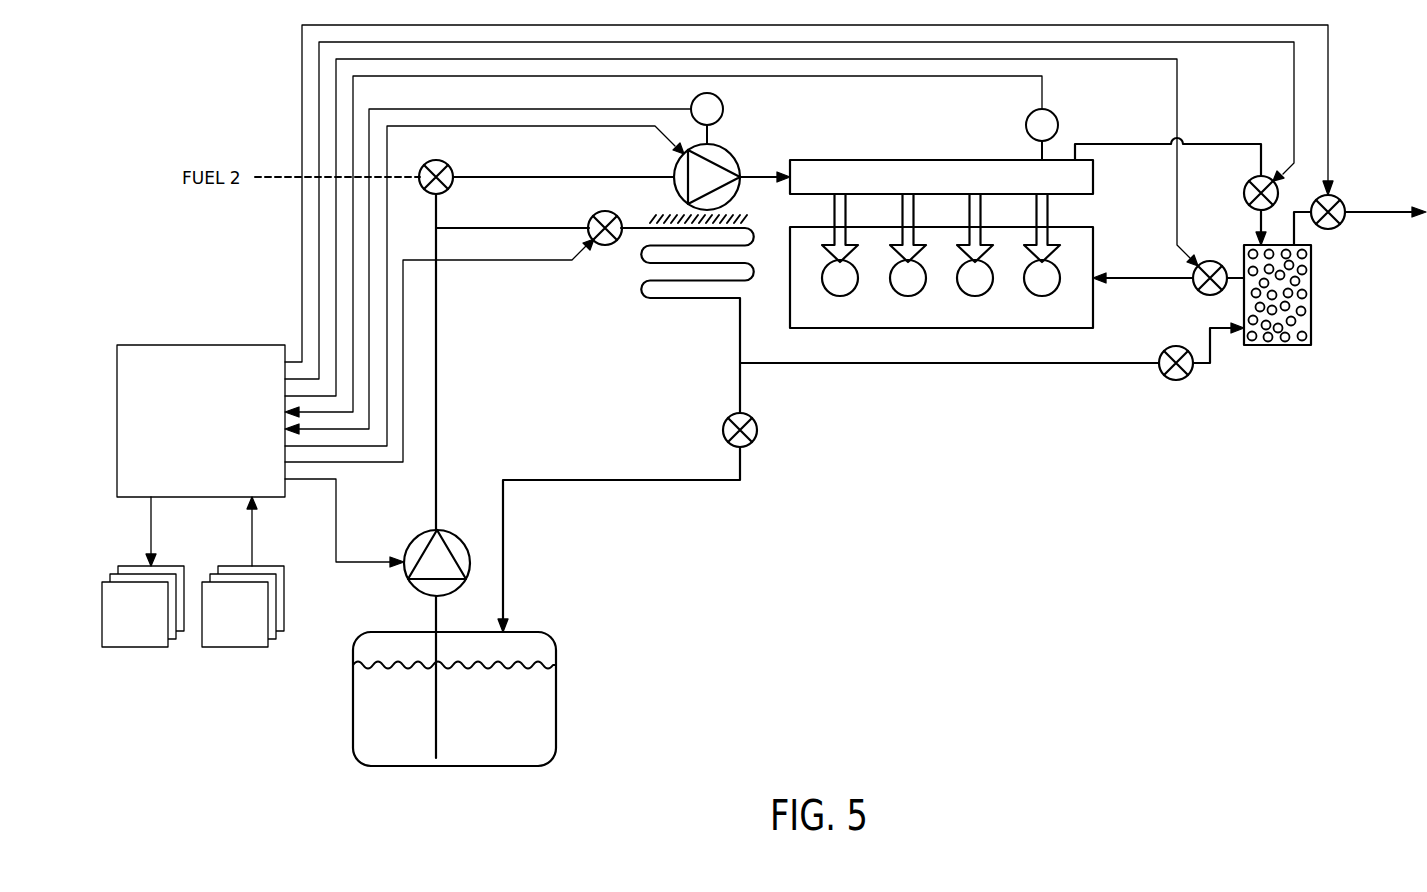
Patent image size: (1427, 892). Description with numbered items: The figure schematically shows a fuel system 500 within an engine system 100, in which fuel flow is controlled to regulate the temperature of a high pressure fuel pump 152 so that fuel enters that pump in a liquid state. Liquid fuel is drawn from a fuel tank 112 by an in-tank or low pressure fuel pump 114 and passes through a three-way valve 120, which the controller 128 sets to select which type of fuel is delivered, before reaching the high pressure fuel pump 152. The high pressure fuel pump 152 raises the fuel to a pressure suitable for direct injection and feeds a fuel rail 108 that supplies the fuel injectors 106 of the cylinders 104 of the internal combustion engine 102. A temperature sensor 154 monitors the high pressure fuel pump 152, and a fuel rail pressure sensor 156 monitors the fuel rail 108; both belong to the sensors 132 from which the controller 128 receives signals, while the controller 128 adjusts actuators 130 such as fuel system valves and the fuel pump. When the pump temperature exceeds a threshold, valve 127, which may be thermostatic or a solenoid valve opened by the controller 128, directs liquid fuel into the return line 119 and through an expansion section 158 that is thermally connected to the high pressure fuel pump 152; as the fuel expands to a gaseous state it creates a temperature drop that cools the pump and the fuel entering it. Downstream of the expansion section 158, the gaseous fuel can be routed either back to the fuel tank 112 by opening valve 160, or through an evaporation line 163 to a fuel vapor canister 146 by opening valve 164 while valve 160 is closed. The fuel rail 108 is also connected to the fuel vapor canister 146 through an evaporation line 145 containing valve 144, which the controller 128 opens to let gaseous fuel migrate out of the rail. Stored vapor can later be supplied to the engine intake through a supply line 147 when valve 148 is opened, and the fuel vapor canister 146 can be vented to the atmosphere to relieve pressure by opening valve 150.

The engine system 100 is at (283, 76).
The internal combustion engine 102 is at (1060, 329).
The cylinders 104 is at (1045, 296).
The fuel injectors 106 is at (1051, 224).
The fuel rail 108 is at (858, 160).
The fuel tank 112 is at (557, 655).
The low pressure fuel pump 114 is at (423, 532).
The return line 119 is at (505, 226).
The three-way valve 120 is at (444, 161).
The valve 127 is at (612, 213).
The controller 128 is at (725, 296).
The actuators 130 is at (136, 650).
The sensors 132 is at (236, 650).
The valve 144 is at (1250, 181).
The evaporation line 145 is at (1193, 143).
The fuel vapor canister 146 is at (1282, 346).
The supply line 147 is at (1114, 282).
The valve 148 is at (1205, 295).
The valve 150 is at (1333, 229).
The high pressure fuel pump 152 is at (729, 150).
The temperature sensor 154 is at (723, 111).
The fuel rail pressure sensor 156 is at (1027, 120).
The expansion section 158 is at (636, 315).
The valve 160 is at (744, 413).
The evaporation line 163 is at (1042, 365).
The valve 164 is at (1173, 379).
The fuel system 500 is at (828, 515).